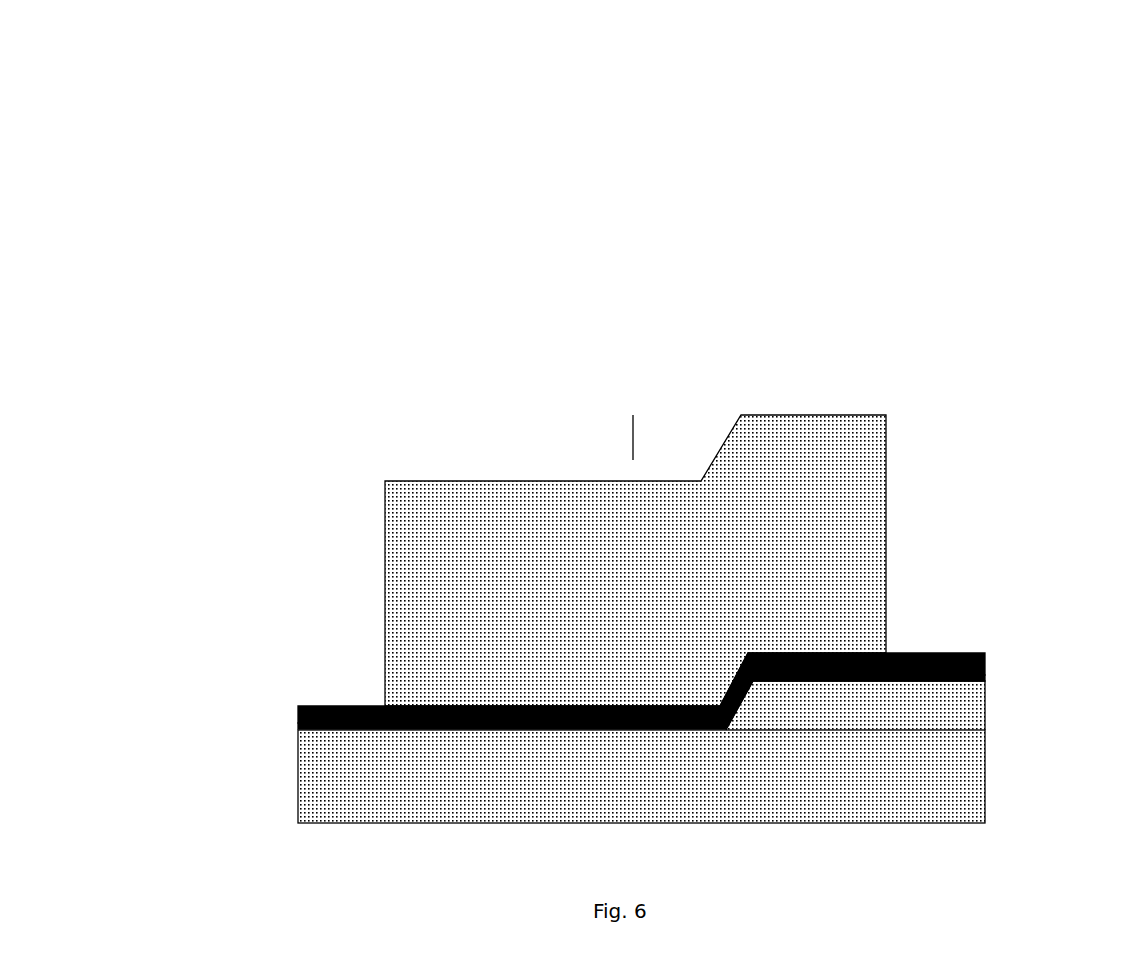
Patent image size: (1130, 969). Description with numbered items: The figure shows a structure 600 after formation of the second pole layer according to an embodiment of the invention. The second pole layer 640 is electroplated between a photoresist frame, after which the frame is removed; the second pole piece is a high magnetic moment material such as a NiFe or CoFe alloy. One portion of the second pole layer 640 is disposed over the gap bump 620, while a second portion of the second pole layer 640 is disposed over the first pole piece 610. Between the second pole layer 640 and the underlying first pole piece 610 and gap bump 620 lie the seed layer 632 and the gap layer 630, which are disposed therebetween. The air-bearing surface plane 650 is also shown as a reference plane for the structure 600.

The structure 600 is at (195, 147).
The first pole piece 610 is at (685, 775).
The gap bump 620 is at (902, 712).
The gap layer 630 is at (977, 672).
The seed layer 632 is at (927, 660).
The second pole layer 640 is at (863, 477).
The air-bearing surface plane 650 is at (613, 435).